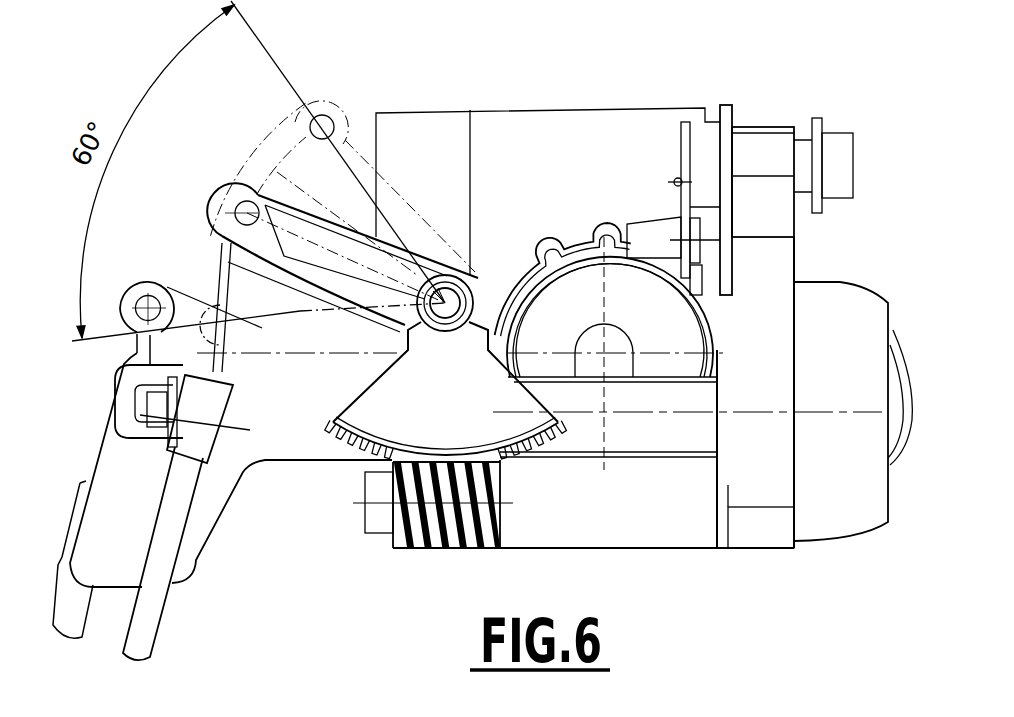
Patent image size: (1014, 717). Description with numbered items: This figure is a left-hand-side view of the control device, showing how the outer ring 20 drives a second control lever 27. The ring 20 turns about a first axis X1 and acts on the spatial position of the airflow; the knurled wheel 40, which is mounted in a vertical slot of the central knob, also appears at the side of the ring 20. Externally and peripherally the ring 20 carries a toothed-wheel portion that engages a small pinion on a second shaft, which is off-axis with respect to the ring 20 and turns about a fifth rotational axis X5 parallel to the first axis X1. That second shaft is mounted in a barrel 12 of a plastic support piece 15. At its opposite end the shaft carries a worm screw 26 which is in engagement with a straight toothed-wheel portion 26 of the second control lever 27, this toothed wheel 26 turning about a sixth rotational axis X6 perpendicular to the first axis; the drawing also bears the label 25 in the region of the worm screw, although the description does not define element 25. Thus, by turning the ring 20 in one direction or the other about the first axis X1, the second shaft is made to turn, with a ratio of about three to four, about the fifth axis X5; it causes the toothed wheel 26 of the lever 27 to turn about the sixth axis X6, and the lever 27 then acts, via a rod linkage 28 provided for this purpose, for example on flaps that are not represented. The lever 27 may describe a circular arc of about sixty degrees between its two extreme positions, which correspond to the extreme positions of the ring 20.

The barrel 12 is at (628, 527).
The support 15 is at (765, 495).
The outer ring 20 is at (838, 312).
The worm 25 is at (452, 548).
The worm screw 26 is at (345, 437).
The second control lever 27 is at (323, 217).
The rod linkage 28 is at (228, 262).
The knurled wheel 40 is at (893, 350).
The first axis X1 is at (862, 412).
The fifth rotational axis X5 is at (352, 503).
The sixth rotational axis X6 is at (473, 282).